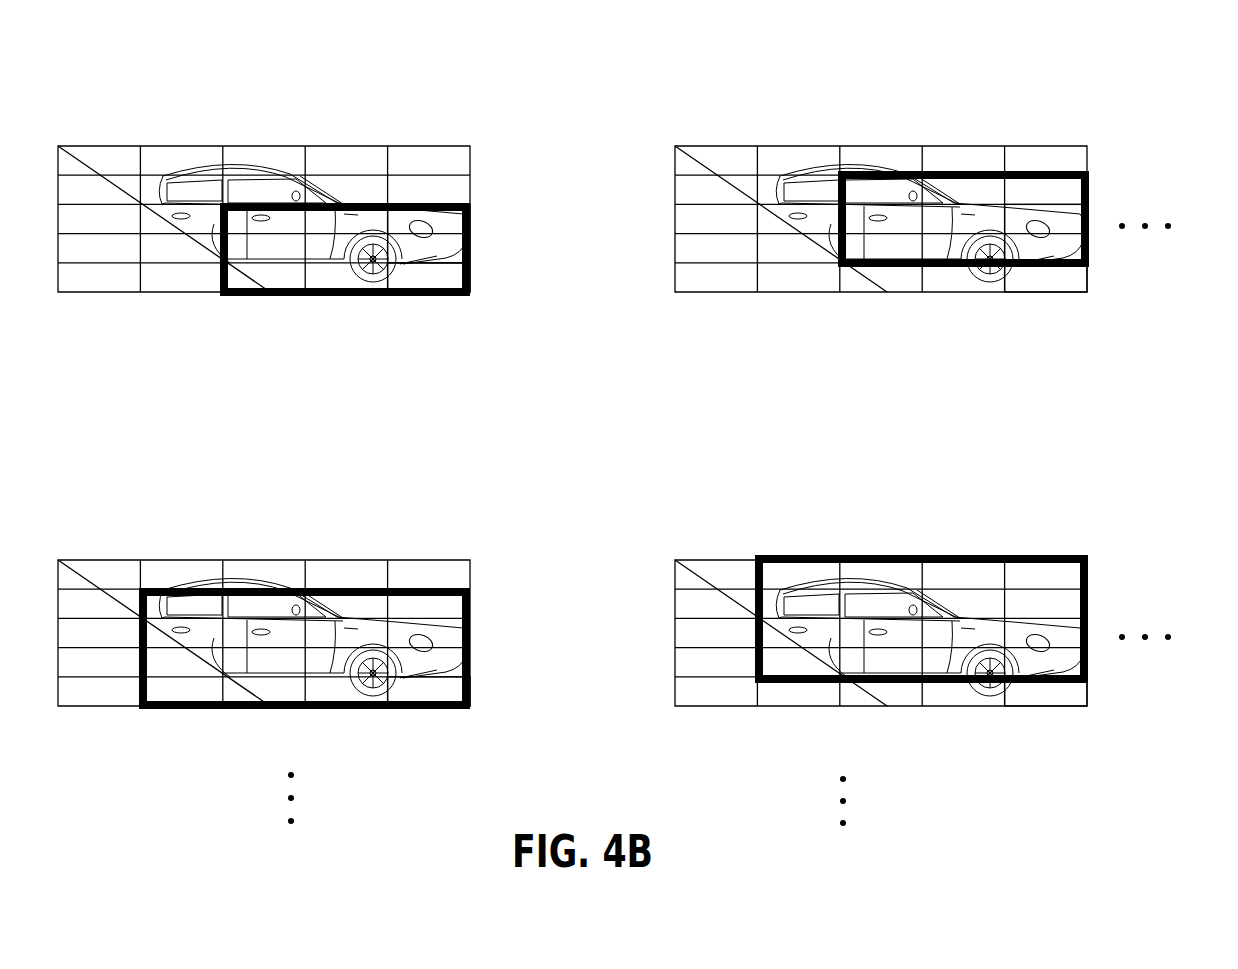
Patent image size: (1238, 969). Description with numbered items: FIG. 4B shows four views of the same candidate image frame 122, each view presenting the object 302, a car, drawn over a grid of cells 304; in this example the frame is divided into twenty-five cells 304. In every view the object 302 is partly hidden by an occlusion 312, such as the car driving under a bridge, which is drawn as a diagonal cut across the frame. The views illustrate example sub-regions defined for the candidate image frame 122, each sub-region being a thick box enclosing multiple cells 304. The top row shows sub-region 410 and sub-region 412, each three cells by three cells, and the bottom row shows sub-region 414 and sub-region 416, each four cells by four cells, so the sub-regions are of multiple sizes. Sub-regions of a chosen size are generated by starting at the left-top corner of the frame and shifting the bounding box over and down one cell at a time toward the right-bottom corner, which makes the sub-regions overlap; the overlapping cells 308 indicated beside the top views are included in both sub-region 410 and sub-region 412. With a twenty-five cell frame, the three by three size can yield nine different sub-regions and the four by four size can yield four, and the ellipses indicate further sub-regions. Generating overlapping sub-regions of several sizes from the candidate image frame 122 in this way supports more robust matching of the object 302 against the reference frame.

The candidate image frame 122 is at (563, 377).
The object 302 is at (658, 388).
The cell 304 is at (737, 527).
The overlapping cells 308 is at (804, 291).
The occlusion 312 is at (463, 470).
The sub-region 410 is at (345, 185).
The sub-region 412 is at (963, 164).
The sub-region 414 is at (304, 592).
The sub-region 416 is at (921, 579).